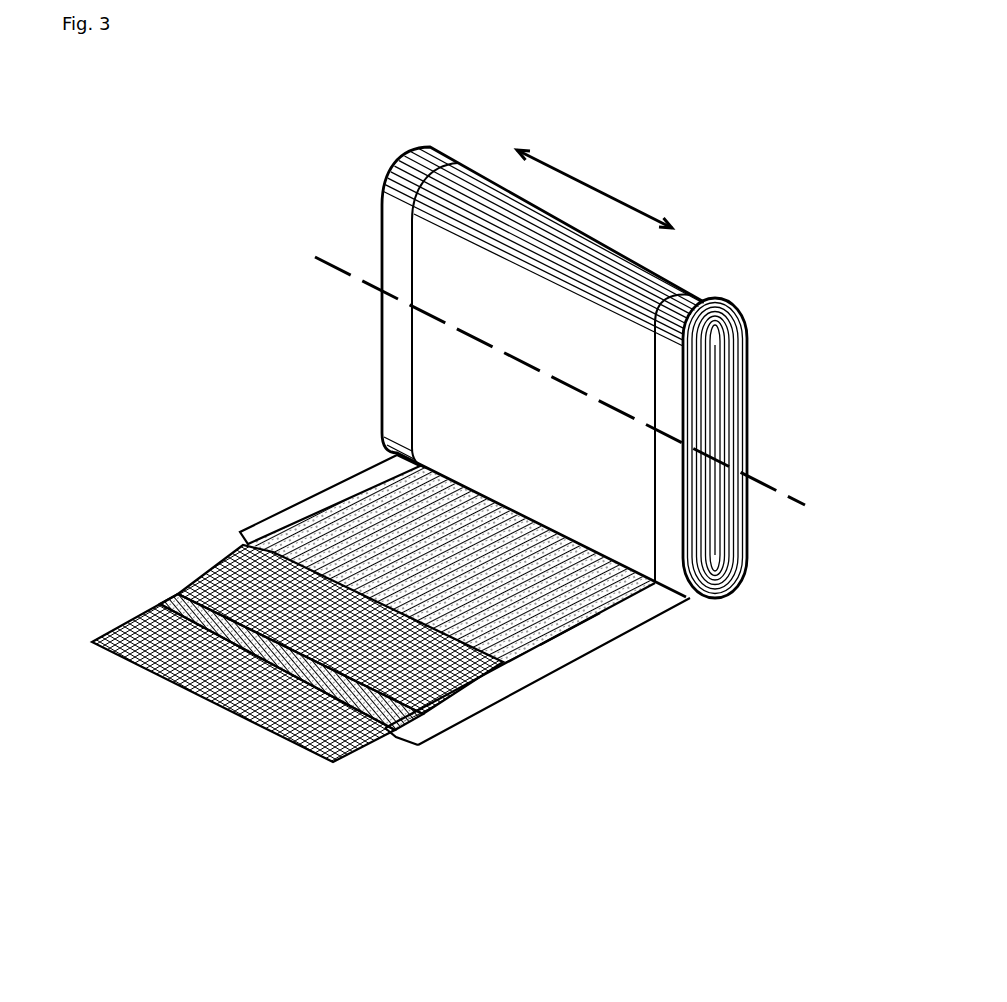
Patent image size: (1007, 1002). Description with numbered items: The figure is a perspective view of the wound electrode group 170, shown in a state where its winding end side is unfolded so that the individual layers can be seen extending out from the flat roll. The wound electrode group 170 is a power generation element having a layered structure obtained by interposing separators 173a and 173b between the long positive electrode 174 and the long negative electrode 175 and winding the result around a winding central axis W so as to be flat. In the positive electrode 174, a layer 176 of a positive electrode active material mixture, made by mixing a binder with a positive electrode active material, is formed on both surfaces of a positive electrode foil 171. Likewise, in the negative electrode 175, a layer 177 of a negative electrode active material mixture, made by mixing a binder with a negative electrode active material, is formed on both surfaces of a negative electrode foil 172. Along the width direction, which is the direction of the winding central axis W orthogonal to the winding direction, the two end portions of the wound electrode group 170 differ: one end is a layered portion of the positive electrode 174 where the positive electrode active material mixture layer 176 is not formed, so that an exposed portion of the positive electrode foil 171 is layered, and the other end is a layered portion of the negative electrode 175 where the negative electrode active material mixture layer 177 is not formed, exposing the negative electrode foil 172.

The wound electrode group 170 is at (667, 85).
The positive electrode foil 171 is at (388, 230).
The negative electrode foil 172 is at (678, 403).
The separator 173a is at (225, 570).
The separator 173b is at (140, 638).
The positive electrode 174 is at (582, 590).
The negative electrode 175 is at (572, 678).
The positive electrode active material mixture layer 176 is at (318, 547).
The negative electrode active material mixture layer 177 is at (398, 724).